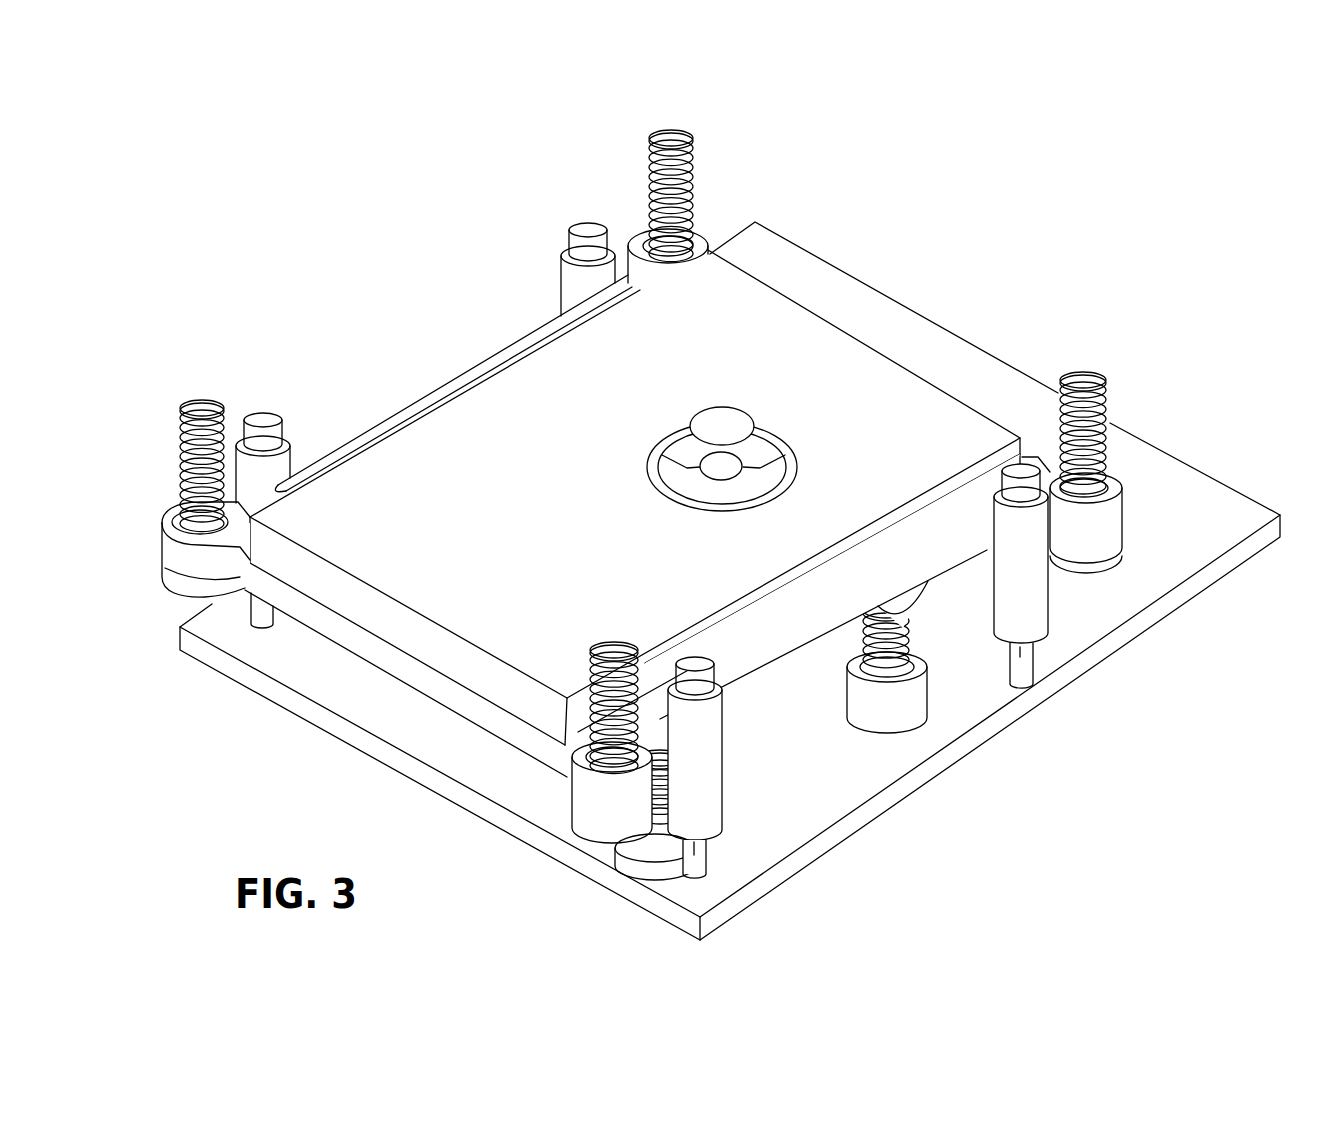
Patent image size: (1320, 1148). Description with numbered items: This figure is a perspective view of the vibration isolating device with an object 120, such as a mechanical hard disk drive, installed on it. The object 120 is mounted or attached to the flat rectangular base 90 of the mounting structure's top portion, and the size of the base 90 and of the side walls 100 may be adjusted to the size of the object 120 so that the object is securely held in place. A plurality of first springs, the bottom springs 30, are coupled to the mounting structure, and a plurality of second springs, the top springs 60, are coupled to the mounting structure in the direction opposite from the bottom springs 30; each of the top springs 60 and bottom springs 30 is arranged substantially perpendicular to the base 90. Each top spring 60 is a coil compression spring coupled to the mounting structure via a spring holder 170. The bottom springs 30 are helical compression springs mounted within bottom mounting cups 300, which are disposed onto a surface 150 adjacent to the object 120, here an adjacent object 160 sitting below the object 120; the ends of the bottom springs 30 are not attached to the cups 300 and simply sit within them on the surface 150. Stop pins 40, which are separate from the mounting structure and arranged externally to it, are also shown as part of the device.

The bottom springs 30 is at (907, 633).
The stop pins 40 is at (571, 216).
The top springs 60 is at (686, 135).
The base 90 is at (471, 703).
The side walls 100 is at (311, 468).
The object 120 is at (810, 394).
The surface 150 is at (787, 797).
The adjacent object 160 is at (945, 767).
The spring holder 170 is at (163, 547).
The bottom mounting cups 300 is at (931, 704).